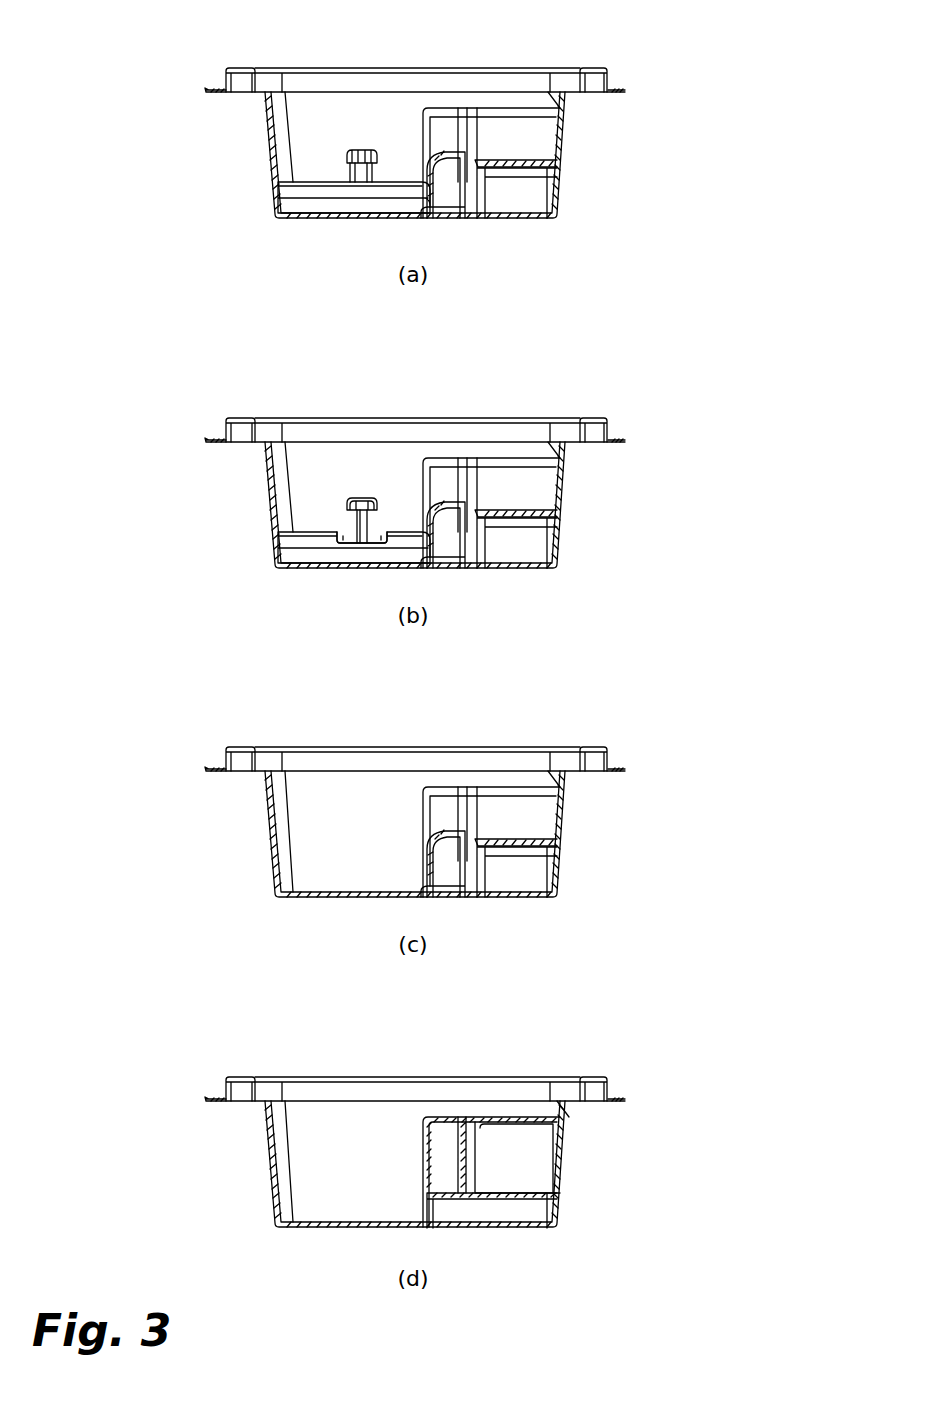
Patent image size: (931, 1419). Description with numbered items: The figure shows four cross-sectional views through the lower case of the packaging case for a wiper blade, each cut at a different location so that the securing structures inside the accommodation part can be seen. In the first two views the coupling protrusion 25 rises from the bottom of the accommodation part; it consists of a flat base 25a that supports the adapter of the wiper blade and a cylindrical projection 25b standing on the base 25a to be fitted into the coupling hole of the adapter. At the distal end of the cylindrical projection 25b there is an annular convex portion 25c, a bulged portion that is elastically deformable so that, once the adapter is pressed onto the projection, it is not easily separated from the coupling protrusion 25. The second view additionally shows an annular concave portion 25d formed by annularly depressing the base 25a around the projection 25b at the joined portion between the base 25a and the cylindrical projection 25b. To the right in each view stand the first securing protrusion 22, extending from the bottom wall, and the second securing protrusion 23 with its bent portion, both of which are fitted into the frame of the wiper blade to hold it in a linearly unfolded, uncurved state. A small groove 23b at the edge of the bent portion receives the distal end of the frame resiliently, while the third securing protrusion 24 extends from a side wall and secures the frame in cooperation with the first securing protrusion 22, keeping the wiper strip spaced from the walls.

The first securing protrusion 22 is at (443, 160).
The second securing protrusion 23 is at (508, 133).
The small groove 23b is at (473, 797).
The third securing protrusion 24 is at (527, 157).
The coupling protrusion 25 is at (338, 284).
The flat base 25a is at (310, 182).
The cylindrical projection 25b is at (360, 152).
The annular convex portion 25c is at (378, 155).
The annular concave portion 25d is at (338, 528).